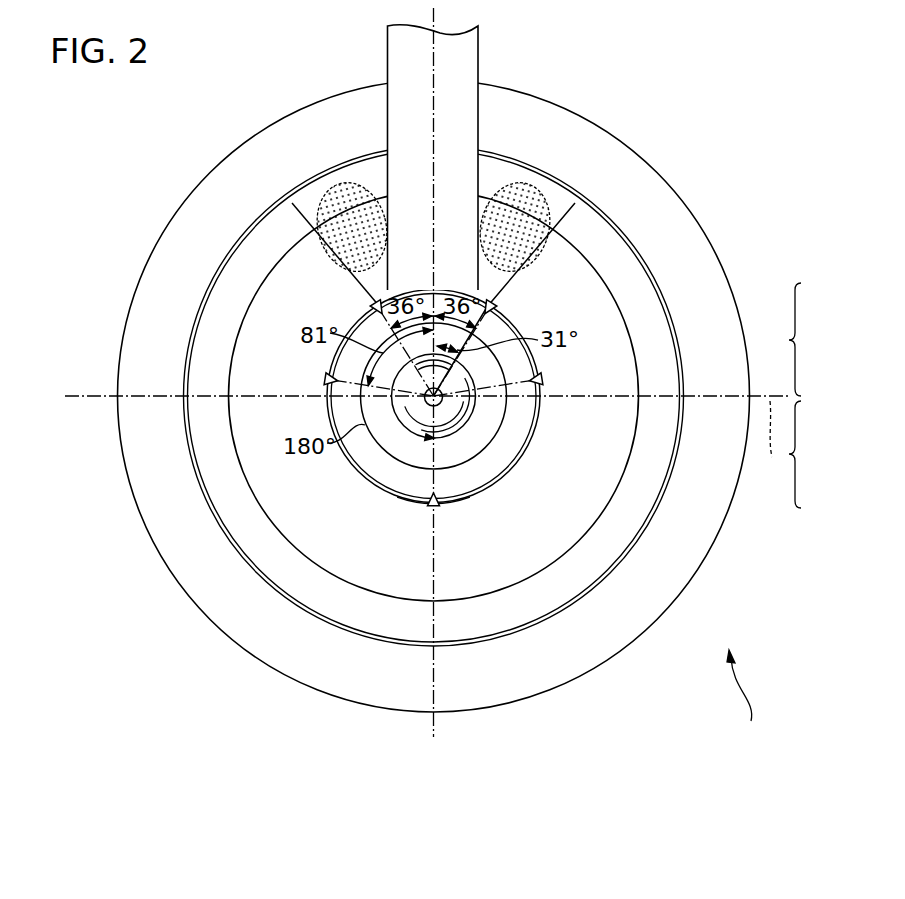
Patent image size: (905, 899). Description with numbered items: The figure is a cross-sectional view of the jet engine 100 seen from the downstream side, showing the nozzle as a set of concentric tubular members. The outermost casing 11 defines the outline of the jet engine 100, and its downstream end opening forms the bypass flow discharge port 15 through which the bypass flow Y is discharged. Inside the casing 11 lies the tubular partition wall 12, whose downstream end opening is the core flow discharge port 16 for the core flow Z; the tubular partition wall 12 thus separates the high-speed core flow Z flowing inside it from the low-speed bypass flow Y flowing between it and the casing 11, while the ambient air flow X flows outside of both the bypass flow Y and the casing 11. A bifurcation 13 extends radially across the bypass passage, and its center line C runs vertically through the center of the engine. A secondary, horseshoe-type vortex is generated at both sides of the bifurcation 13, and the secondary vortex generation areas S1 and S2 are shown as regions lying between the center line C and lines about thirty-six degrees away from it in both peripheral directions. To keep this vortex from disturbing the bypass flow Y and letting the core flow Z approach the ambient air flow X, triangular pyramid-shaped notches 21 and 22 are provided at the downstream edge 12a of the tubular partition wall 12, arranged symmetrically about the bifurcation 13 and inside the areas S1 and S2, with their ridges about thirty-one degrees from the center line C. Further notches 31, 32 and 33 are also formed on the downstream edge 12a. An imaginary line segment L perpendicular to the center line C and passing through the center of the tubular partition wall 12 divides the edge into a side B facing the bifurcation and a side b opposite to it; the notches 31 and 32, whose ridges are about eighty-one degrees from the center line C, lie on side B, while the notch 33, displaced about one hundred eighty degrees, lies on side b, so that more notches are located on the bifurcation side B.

The casing 11 is at (167, 528).
The tubular partition wall 12 is at (305, 533).
The downstream edge 12a is at (410, 502).
The bifurcation 13 is at (447, 122).
The bypass flow discharge port 15 is at (247, 528).
The core flow discharge port 16 is at (362, 453).
The notch 21 is at (377, 306).
The notch 22 is at (492, 305).
The notch 31 is at (540, 380).
The notch 32 is at (442, 500).
The notch 33 is at (327, 380).
The jet engine 100 is at (751, 702).
The secondary vortex generation area S1 is at (332, 180).
The secondary vortex generation area S2 is at (538, 180).
The center line C is at (434, 48).
The side of the bifurcation B is at (806, 339).
The side opposite to the bifurcation b is at (807, 454).
The imaginary line segment L is at (767, 444).
The ambient air flow X is at (265, 691).
The bypass flow Y is at (322, 598).
The core flow Z is at (388, 474).